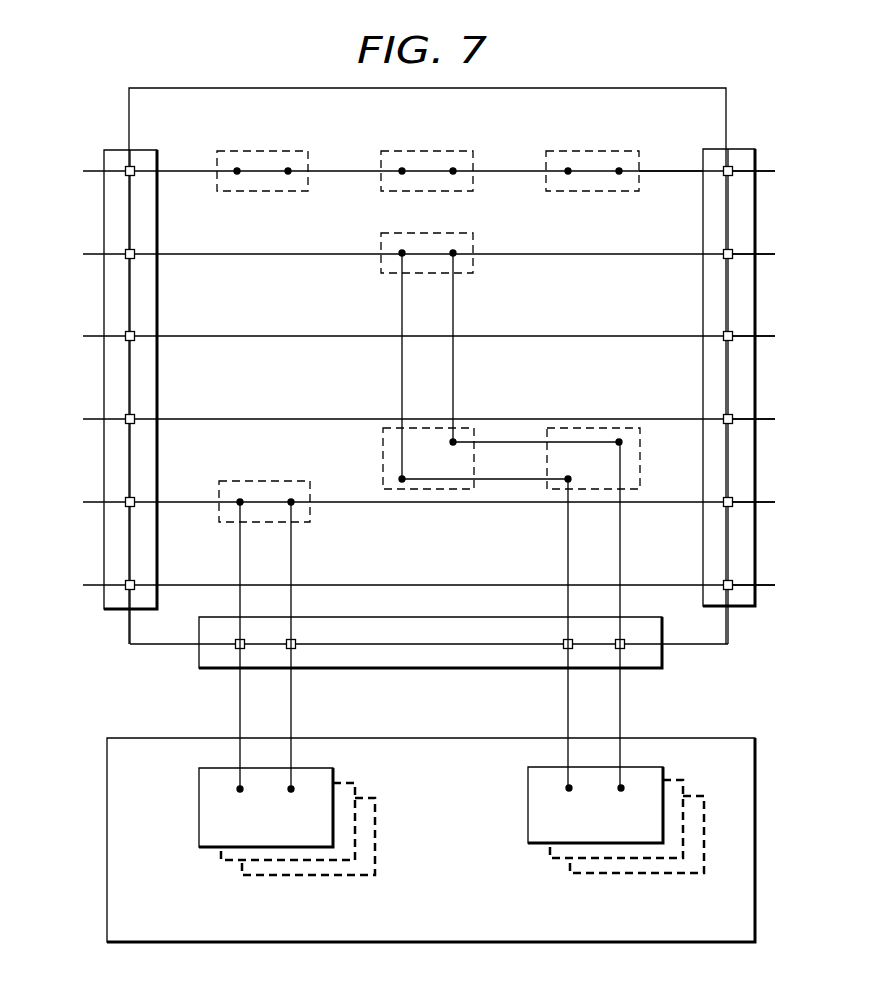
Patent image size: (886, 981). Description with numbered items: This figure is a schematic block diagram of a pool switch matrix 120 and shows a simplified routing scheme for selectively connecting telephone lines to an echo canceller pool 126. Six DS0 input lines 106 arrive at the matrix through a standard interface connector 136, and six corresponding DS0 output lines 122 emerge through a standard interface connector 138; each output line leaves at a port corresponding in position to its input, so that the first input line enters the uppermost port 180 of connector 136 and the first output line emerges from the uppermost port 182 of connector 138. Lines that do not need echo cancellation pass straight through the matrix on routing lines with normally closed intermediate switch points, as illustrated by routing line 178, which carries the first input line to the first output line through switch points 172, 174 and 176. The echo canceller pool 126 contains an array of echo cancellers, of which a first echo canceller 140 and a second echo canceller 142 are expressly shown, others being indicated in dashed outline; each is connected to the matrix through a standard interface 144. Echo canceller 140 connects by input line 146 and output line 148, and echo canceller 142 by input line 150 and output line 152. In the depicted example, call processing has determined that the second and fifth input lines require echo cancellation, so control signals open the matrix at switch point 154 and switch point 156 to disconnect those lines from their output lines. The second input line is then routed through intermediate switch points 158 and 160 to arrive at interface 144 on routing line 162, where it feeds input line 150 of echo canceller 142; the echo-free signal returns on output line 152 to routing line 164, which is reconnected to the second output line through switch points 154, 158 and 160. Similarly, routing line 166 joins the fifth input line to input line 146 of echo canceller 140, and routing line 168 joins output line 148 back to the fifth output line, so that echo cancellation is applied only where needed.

The DS0 input lines 106 is at (400, 380).
The pool switch matrix 120 is at (726, 118).
The DS0 output lines 122 is at (776, 380).
The echo canceller pool 126 is at (107, 858).
The standard interface connector 136 is at (104, 150).
The standard interface connector 138 is at (748, 607).
The first echo canceller 140 is at (199, 804).
The second echo canceller 142 is at (528, 802).
The standard interface 144 is at (199, 655).
The input line 146 is at (240, 700).
The output line 148 is at (291, 700).
The input line 150 is at (568, 698).
The output line 152 is at (620, 698).
The switch point 154 is at (379, 266).
The switch point 156 is at (266, 479).
The intermediate switch point 158 is at (380, 465).
The intermediate switch point 160 is at (594, 426).
The routing line 162 is at (568, 550).
The routing line 164 is at (620, 550).
The routing line 166 is at (240, 552).
The routing line 168 is at (291, 552).
The intermediate switch point 172 is at (264, 149).
The intermediate switch point 174 is at (477, 185).
The intermediate switch point 176 is at (593, 148).
The routing line 178 is at (668, 170).
The uppermost port 180 is at (134, 176).
The uppermost port 182 is at (724, 176).